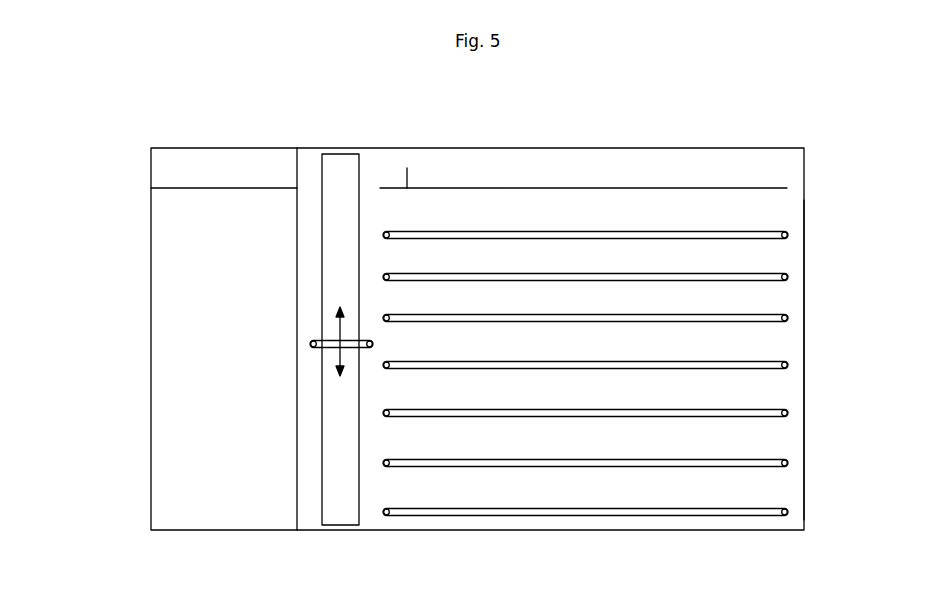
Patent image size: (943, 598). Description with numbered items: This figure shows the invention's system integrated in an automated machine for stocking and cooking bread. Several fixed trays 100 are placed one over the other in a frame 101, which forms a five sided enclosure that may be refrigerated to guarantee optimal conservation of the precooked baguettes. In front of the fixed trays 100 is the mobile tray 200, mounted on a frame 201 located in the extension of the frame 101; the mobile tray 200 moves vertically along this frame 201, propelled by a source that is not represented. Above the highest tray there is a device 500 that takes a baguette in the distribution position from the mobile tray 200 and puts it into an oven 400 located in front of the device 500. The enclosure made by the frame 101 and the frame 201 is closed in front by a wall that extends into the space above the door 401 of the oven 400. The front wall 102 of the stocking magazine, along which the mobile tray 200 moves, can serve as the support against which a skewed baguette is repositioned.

The fixed tray 100 is at (779, 233).
The frame 101 is at (716, 207).
The front wall 102 is at (295, 268).
The mobile tray 200 is at (327, 337).
The frame 201 is at (362, 176).
The oven 400 is at (213, 172).
The door 401 is at (299, 168).
The device 500 is at (555, 188).